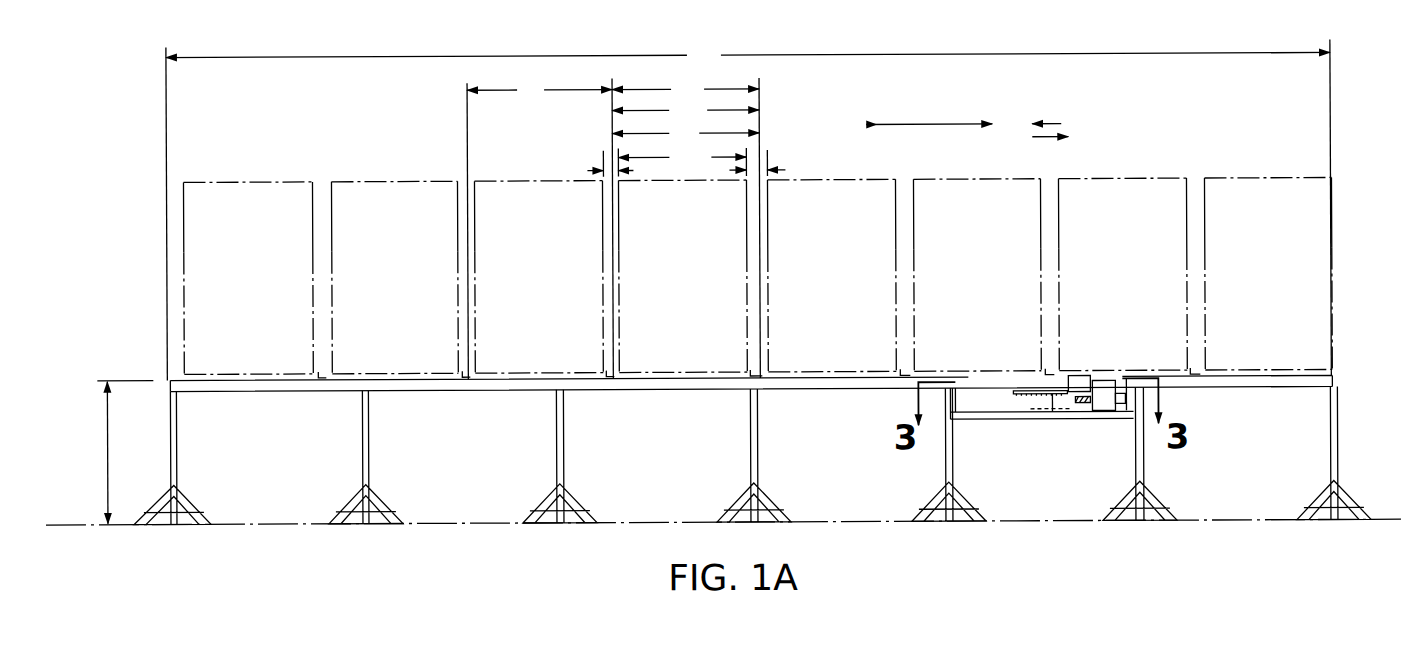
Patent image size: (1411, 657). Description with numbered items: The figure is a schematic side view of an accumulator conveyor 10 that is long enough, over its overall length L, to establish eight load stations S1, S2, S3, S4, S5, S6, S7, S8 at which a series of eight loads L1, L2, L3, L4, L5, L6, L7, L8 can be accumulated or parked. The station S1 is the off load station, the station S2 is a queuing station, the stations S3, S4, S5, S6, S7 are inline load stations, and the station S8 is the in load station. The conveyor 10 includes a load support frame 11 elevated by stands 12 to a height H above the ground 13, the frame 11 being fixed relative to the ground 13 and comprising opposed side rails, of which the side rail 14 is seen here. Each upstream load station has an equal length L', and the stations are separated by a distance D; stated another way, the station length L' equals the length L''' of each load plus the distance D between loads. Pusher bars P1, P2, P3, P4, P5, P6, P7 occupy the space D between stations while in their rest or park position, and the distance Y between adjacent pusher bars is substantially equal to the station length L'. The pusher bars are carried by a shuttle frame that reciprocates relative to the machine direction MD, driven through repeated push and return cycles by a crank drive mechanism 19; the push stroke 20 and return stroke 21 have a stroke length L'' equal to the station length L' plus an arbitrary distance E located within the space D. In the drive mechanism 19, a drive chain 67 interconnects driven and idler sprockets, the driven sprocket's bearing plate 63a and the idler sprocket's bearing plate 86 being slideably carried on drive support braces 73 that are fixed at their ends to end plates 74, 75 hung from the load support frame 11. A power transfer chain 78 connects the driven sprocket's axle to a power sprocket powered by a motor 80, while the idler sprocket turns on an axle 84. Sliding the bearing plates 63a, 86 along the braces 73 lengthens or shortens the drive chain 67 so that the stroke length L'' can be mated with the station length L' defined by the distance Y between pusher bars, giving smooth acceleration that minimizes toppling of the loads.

The accumulator conveyor 10 is at (1366, 380).
The load support frame 11 is at (1240, 380).
The stands 12 is at (566, 462).
The ground 13 is at (638, 522).
The side rail 14 is at (798, 389).
The crank drive mechanism 19 is at (1077, 410).
The push stroke 20 is at (1042, 141).
The return stroke 21 is at (1052, 123).
The bearing plate 63a is at (1120, 413).
The drive chain 67 is at (1022, 391).
The drive support brace 73 is at (985, 421).
The end plate 74 is at (958, 402).
The end plate 75 is at (1127, 420).
The power transfer chain 78 is at (1053, 414).
The motor 80 is at (1078, 377).
The axle 84 is at (1040, 400).
The bearing plate 86 is at (1048, 412).
The load L1 is at (1276, 180).
The load L2 is at (1122, 180).
The load L3 is at (976, 180).
The load L4 is at (851, 180).
The load L5 is at (688, 182).
The load L6 is at (562, 180).
The load L7 is at (412, 158).
The load L8 is at (278, 180).
The pusher bar P1 is at (1200, 372).
The pusher bar P2 is at (1052, 368).
The pusher bar P3 is at (904, 375).
The pusher bar P4 is at (768, 375).
The pusher bar P5 is at (623, 376).
The pusher bar P6 is at (478, 375).
The pusher bar P7 is at (340, 375).
The off load station S1 is at (1301, 395).
The queing station S2 is at (1143, 348).
The inline load station S3 is at (992, 338).
The inline load station S4 is at (840, 407).
The inline load station S5 is at (681, 410).
The inline load station S6 is at (515, 410).
The inline load station S7 is at (406, 408).
The in load station S8 is at (266, 408).
The conveyor length L is at (748, 209).
The load station length L' is at (613, 91).
The stroke length L'' is at (685, 111).
The load length L''' is at (682, 162).
The distance between pusher bars Y is at (685, 134).
The distance between loads D is at (604, 150).
The arbitrary distance E is at (614, 178).
The height above ground H is at (125, 452).
The machine direction MD is at (942, 130).